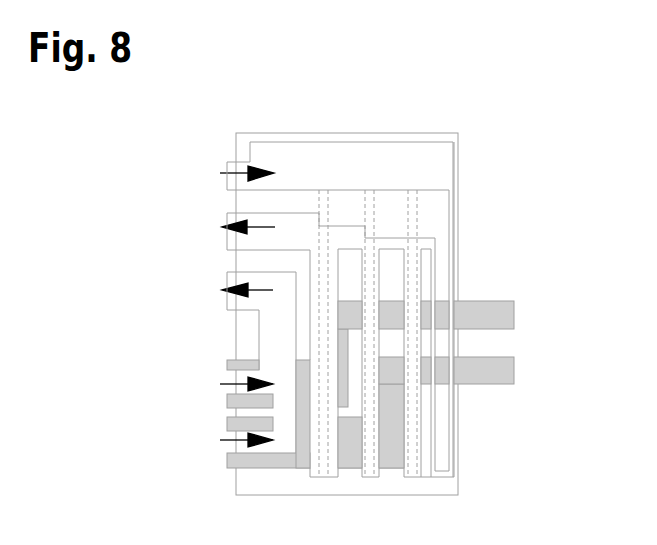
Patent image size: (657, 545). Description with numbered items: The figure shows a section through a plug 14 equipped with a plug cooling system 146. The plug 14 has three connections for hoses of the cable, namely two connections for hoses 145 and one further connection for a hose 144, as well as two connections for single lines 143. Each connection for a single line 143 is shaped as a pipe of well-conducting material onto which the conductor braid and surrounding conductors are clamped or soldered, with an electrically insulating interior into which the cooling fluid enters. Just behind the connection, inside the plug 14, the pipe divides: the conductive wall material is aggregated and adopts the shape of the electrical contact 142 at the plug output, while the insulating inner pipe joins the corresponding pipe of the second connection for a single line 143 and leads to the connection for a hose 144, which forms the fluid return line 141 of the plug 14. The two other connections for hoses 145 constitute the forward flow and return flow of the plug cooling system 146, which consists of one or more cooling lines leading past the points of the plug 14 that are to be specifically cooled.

The plug 14 is at (330, 101).
The fluid return line 141 is at (273, 332).
The electrical contact 142 is at (495, 309).
The connection for single line 143 is at (233, 395).
The connection for a hose 144 is at (233, 299).
The connections for hoses 145 is at (232, 182).
The plug cooling system 146 is at (423, 167).